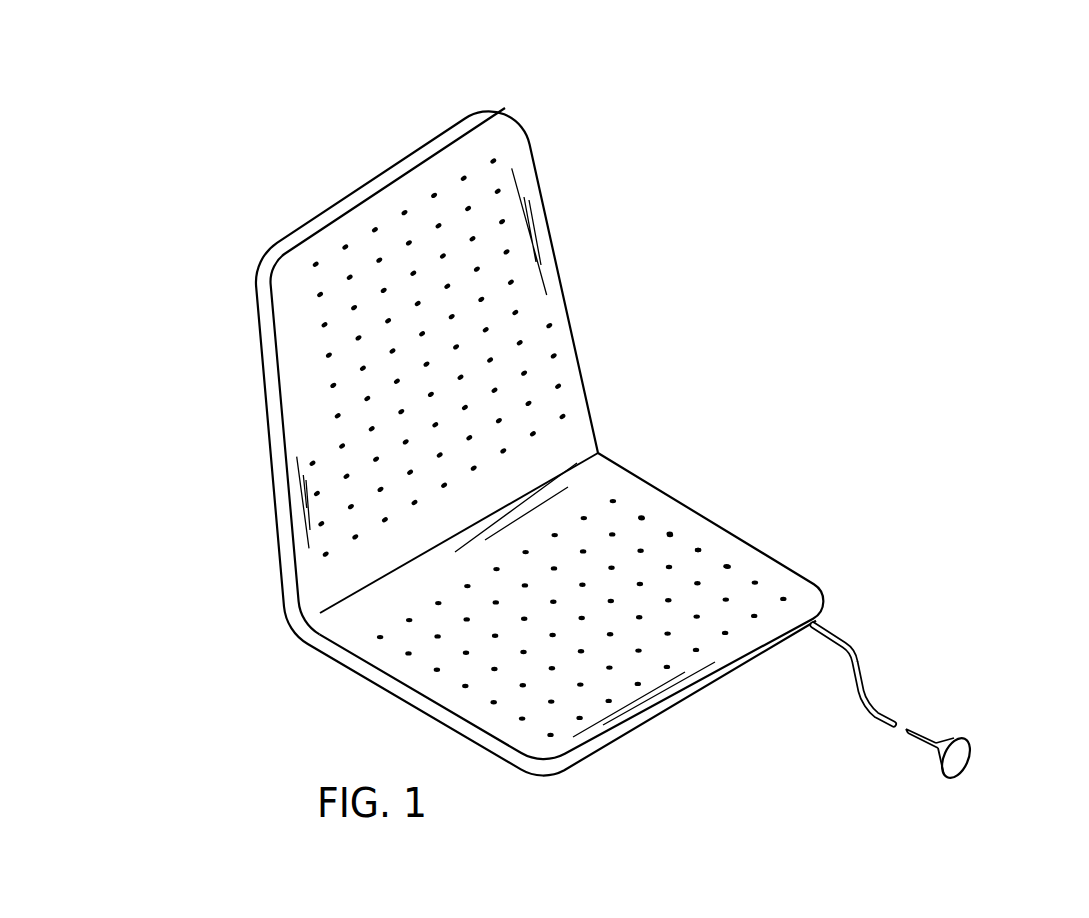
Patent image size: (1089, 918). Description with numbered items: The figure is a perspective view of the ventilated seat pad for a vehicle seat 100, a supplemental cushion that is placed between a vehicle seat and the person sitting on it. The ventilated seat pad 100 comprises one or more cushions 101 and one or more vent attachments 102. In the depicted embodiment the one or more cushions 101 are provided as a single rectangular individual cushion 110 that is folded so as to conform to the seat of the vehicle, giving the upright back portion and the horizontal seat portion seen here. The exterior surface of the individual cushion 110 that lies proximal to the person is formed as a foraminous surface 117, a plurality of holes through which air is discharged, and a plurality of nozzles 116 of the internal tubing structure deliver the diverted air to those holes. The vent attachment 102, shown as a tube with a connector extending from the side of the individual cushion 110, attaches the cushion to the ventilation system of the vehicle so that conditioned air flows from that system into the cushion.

The ventilated seat pad for a vehicle seat 100 is at (199, 70).
The one or more cushions 101 is at (598, 455).
The individual cushion 110 is at (803, 595).
The plurality of nozzles 116 is at (671, 531).
The foraminous surface 117 is at (728, 565).
The one or more vent attachments 102 is at (872, 698).